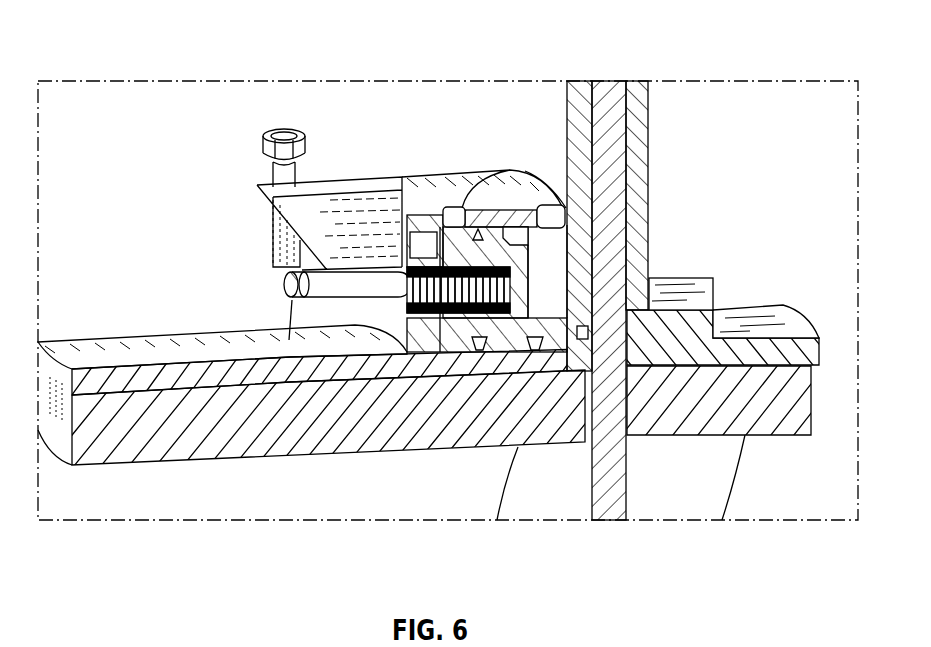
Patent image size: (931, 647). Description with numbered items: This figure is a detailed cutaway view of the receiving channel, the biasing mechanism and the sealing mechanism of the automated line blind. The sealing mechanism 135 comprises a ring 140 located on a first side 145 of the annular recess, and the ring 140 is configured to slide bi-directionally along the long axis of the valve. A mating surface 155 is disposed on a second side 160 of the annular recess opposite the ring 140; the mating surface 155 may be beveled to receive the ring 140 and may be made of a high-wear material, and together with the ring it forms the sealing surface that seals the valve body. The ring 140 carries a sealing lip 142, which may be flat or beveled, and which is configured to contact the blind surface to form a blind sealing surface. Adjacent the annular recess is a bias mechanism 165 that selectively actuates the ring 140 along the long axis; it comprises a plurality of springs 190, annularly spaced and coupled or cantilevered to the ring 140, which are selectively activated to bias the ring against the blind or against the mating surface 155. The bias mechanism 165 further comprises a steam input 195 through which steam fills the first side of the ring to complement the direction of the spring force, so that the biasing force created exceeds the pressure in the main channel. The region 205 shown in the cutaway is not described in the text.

The bias mechanism 165 is at (258, 72).
The springs 190 is at (465, 290).
The steam input 195 is at (543, 217).
The second side 160 is at (628, 177).
The cavity 205 is at (552, 252).
The sealing lip 142 is at (600, 322).
The mating surface 155 is at (630, 337).
The first side 145 is at (588, 362).
The ring 140 is at (507, 340).
The sealing mechanism 135 is at (580, 527).